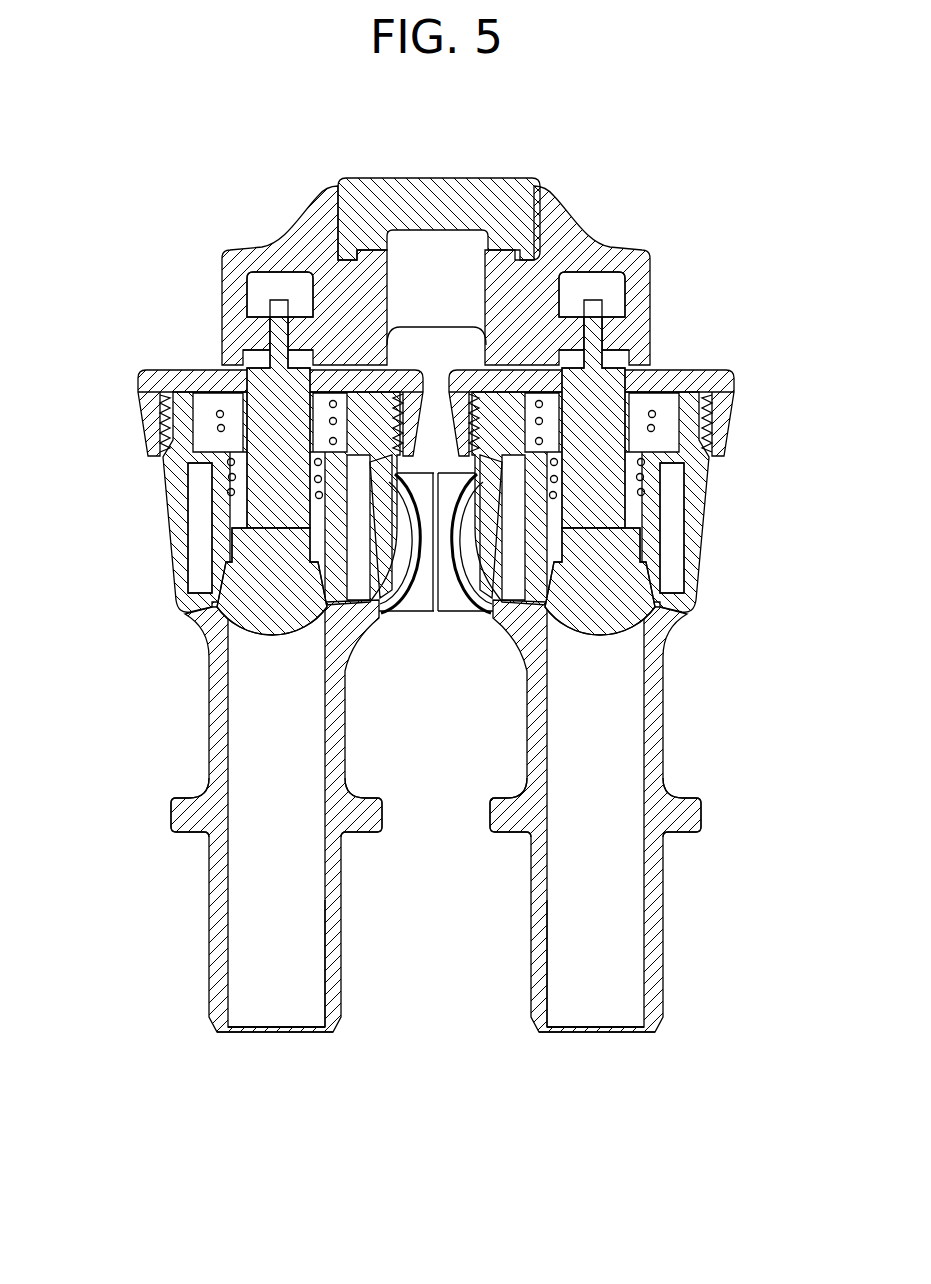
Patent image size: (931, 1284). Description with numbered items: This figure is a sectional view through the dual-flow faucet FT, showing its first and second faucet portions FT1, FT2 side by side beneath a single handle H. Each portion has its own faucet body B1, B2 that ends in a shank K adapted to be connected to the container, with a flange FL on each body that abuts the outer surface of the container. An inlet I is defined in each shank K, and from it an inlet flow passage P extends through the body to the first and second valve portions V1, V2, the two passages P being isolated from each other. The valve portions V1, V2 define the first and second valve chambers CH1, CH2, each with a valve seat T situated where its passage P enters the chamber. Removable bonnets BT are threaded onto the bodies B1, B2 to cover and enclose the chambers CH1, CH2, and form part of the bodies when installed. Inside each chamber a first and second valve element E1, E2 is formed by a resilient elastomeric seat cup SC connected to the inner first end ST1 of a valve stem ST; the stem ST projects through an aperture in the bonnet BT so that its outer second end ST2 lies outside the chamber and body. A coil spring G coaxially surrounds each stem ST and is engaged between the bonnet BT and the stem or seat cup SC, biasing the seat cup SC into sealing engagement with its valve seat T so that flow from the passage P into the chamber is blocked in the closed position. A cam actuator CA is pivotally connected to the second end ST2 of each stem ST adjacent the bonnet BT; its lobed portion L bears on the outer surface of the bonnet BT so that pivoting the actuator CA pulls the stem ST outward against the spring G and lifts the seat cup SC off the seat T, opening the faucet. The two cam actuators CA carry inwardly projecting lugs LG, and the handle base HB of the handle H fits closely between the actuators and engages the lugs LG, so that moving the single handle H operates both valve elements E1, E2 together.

The handle H is at (431, 245).
The handle base HB is at (520, 186).
The cam actuator CA is at (275, 238).
The lug LG is at (495, 291).
The second end of valve stem ST2 is at (262, 298).
The lobed portion L is at (208, 368).
The faucet FT is at (430, 693).
The first faucet portion FT1 is at (251, 712).
The second faucet portion FT2 is at (613, 712).
The bonnet BT is at (175, 372).
The valve seat T is at (205, 605).
The first valve portion V1 is at (165, 550).
The second valve portion V2 is at (712, 540).
The first valve chamber CH1 is at (185, 508).
The second valve chamber CH2 is at (688, 498).
The first faucet body B1 is at (340, 750).
The second faucet body B2 is at (525, 732).
The first valve element E1 is at (257, 614).
The second valve element E2 is at (602, 592).
The valve stem ST is at (297, 475).
The first end of valve stem ST1 is at (213, 600).
The coil spring G is at (215, 485).
The seat cup SC is at (297, 612).
The flange FL is at (175, 812).
The inlet flow passage P is at (322, 898).
The shank K is at (345, 980).
The inlet I is at (262, 1032).